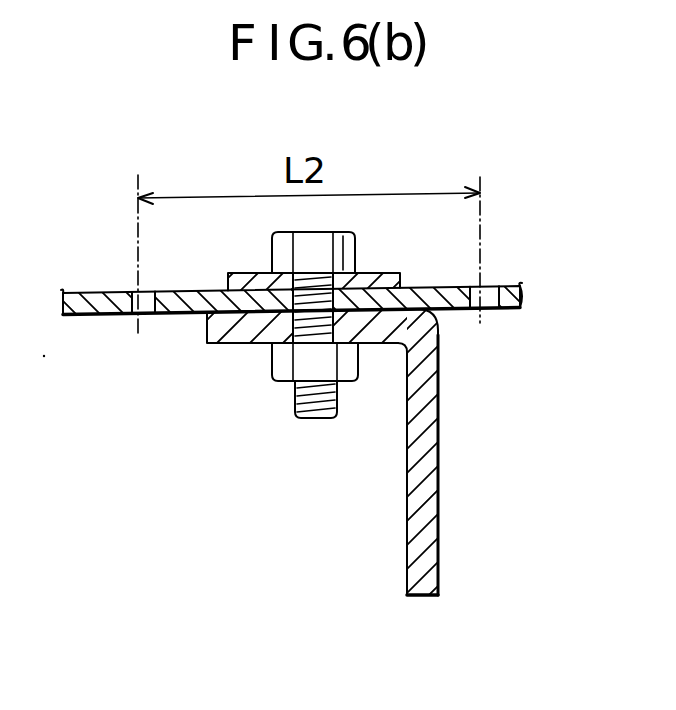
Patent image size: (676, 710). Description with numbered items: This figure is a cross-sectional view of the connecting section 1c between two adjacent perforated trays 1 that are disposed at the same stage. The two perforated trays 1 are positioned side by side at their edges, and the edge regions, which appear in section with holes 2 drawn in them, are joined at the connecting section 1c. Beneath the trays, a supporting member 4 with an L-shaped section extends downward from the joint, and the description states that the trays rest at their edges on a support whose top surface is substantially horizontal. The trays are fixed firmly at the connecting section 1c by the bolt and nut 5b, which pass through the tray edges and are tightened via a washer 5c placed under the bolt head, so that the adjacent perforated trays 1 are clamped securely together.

The perforated tray 1 is at (107, 314).
The hole 2 is at (130, 280).
The connecting section 1c is at (263, 363).
The bracket 4 is at (439, 498).
The bolt and nut 5b is at (322, 422).
The washer 5c is at (401, 273).